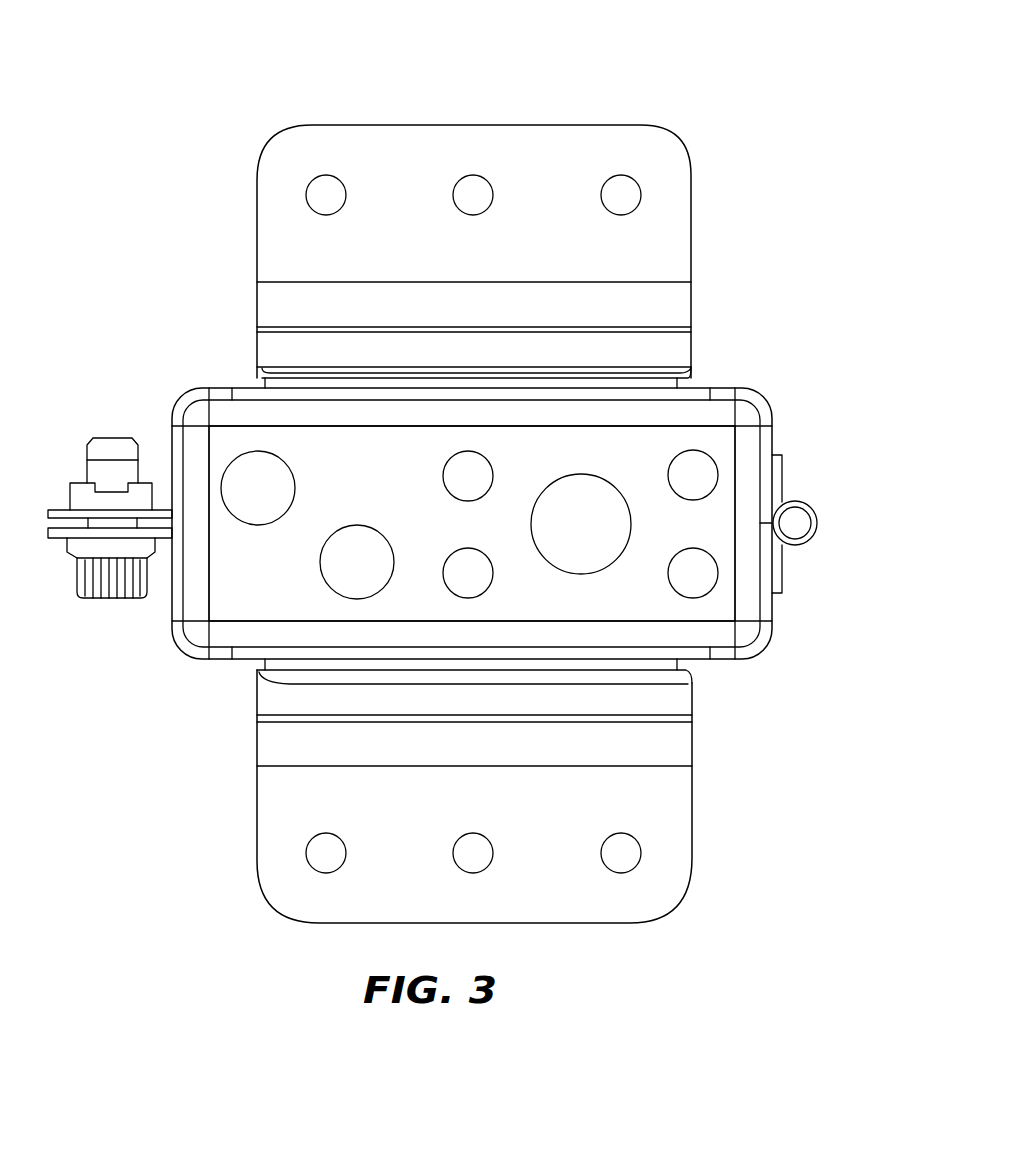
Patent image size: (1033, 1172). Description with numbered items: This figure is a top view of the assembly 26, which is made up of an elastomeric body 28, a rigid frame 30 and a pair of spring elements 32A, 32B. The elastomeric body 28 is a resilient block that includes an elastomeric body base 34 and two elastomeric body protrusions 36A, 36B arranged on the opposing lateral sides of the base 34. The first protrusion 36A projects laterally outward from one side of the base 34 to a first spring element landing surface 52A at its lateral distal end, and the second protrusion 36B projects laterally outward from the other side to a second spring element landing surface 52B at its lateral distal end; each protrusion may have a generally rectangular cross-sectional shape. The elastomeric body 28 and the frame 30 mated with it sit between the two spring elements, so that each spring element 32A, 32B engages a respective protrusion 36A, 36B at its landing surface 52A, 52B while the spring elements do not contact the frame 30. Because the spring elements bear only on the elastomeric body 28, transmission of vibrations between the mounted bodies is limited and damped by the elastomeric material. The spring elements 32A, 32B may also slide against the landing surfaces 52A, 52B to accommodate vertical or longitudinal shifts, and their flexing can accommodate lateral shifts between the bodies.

The assembly 26 is at (656, 102).
The elastomeric body 28 is at (208, 640).
The rigid frame 30 is at (768, 393).
The spring element 32A is at (700, 819).
The spring element 32B is at (698, 246).
The elastomeric body base 34 is at (227, 442).
The elastomeric body protrusion 36A is at (268, 668).
The elastomeric body protrusion 36B is at (266, 383).
The spring element landing surface 52A is at (318, 672).
The spring element landing surface 52B is at (262, 368).